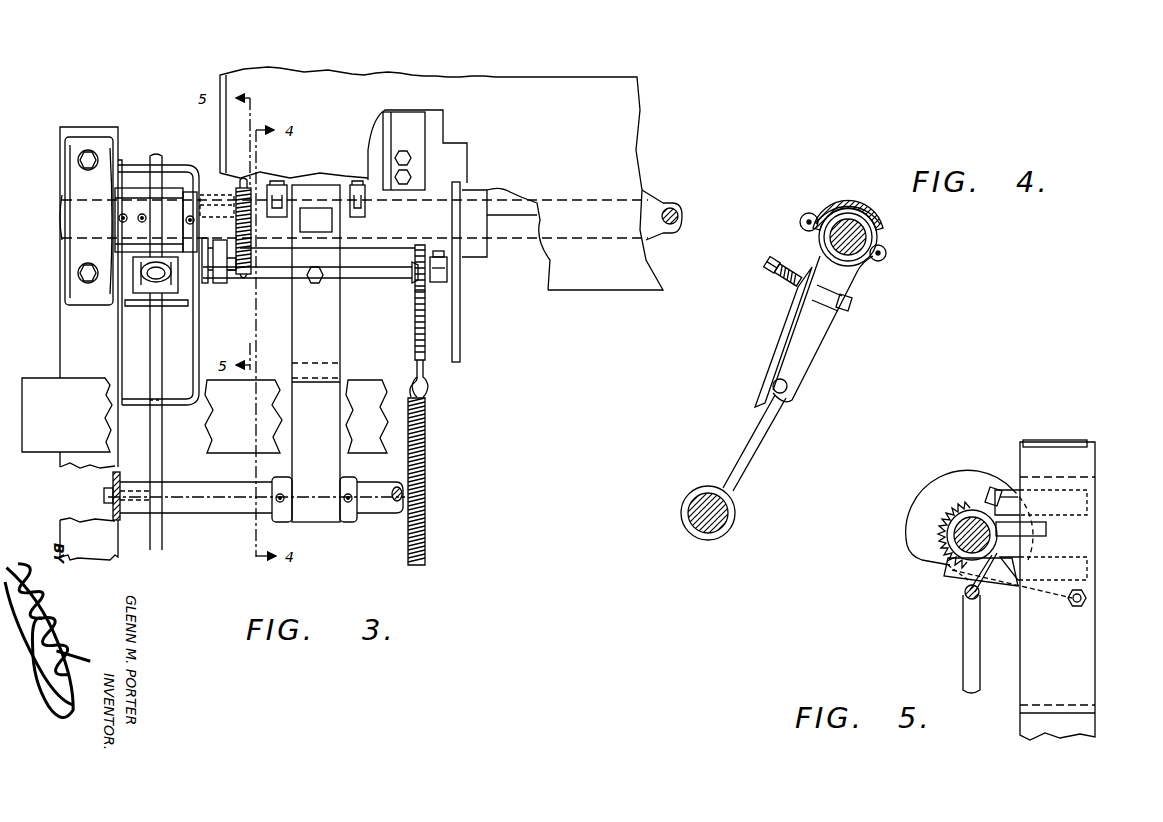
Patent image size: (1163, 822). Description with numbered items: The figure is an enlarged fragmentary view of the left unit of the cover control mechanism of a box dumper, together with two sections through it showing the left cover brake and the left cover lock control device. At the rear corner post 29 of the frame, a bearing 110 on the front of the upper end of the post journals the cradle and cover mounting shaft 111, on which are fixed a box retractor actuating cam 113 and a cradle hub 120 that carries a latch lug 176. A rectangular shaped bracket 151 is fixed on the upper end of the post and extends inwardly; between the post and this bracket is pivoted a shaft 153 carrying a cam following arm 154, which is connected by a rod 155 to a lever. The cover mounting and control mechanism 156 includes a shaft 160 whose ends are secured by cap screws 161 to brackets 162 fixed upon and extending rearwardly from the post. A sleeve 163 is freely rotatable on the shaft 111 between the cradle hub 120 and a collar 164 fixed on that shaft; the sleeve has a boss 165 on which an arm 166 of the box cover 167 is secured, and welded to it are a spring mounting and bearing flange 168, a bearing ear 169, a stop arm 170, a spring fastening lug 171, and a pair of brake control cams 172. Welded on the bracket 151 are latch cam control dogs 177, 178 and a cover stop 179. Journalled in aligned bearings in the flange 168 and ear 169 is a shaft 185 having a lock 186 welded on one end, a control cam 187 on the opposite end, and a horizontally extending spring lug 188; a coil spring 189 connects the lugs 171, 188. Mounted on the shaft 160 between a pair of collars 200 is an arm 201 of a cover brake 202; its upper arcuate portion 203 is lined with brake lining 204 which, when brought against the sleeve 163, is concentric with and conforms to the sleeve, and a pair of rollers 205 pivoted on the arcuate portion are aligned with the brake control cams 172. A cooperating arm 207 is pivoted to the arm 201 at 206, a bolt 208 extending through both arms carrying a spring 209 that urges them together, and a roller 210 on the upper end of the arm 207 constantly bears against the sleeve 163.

In FIG. 3, the rear corner post 29 is at (62, 338).
In FIG. 3, the bearing 110 is at (84, 255).
In FIG. 3, the cradle and cover mounting shaft 111 is at (66, 220).
In FIG. 3, the box retractor actuating cam 113 is at (156, 155).
In FIG. 3, the cradle hub 120 is at (483, 192).
In FIG. 3, the bracket 151 is at (195, 352).
In FIG. 5, the bracket 151 is at (1082, 690).
In FIG. 3, the shaft 153 is at (182, 312).
In FIG. 5, the shaft 153 is at (1088, 598).
In FIG. 3, the cam following arm 154 is at (146, 285).
In FIG. 5, the cam following arm 154 is at (994, 587).
In FIG. 3, the rod 155 is at (156, 380).
In FIG. 5, the rod 155 is at (963, 653).
In FIG. 3, the cover mounting and control mechanism 156 is at (443, 400).
In FIG. 3, the shaft 160 is at (218, 507).
In FIG. 4, the shaft 160 is at (732, 519).
In FIG. 3, the cap screw 161 is at (105, 491).
In FIG. 3, the bracket 162 is at (113, 515).
In FIG. 3, the sleeve 163 is at (350, 240).
In FIG. 4, the sleeve 163 is at (880, 230).
In FIG. 3, the collar 164 is at (187, 200).
In FIG. 3, the boss 165 is at (428, 198).
In FIG. 3, the arm 166 is at (418, 127).
In FIG. 3, the box cover 167 is at (636, 126).
In FIG. 3, the spring mounting and bearing flange 168 is at (423, 245).
In FIG. 3, the bearing ear 169 is at (228, 283).
In FIG. 5, the bearing ear 169 is at (952, 545).
In FIG. 3, the stop arm 170 is at (228, 215).
In FIG. 5, the stop arm 170 is at (1040, 530).
In FIG. 3, the spring fastening lug 171 is at (246, 181).
In FIG. 5, the spring fastening lug 171 is at (992, 498).
In FIG. 3, the brake control cam 172 is at (278, 185).
In FIG. 4, the brake control cam 172 is at (860, 210).
In FIG. 3, the latch lug 176 is at (438, 256).
In FIG. 3, the latch cam control dog 177 is at (203, 157).
In FIG. 5, the latch cam control dog 177 is at (1014, 480).
In FIG. 5, the latch cam control dog 178 is at (1057, 582).
In FIG. 3, the cover stop 179 is at (239, 192).
In FIG. 5, the cover stop 179 is at (1025, 512).
In FIG. 3, the shaft 185 is at (380, 278).
In FIG. 3, the lock 186 is at (447, 281).
In FIG. 3, the control cam 187 is at (205, 283).
In FIG. 5, the control cam 187 is at (946, 577).
In FIG. 3, the spring lug 188 is at (245, 274).
In FIG. 5, the spring lug 188 is at (962, 596).
In FIG. 5, the coil spring 189 is at (952, 512).
In FIG. 3, the collar 200 is at (340, 525).
In FIG. 3, the arm 201 is at (332, 398).
In FIG. 4, the arm 201 is at (742, 446).
In FIG. 3, the cover brake 202 is at (343, 334).
In FIG. 4, the cover brake 202 is at (765, 337).
In FIG. 4, the arcuate portion 203 is at (836, 210).
In FIG. 4, the brake lining 204 is at (820, 240).
In FIG. 4, the roller 205 is at (800, 218).
In FIG. 4, the pivot 206 is at (772, 387).
In FIG. 4, the cooperating arm 207 is at (815, 349).
In FIG. 4, the bolt 208 is at (852, 303).
In FIG. 4, the spring 209 is at (780, 284).
In FIG. 4, the roller 210 is at (886, 250).